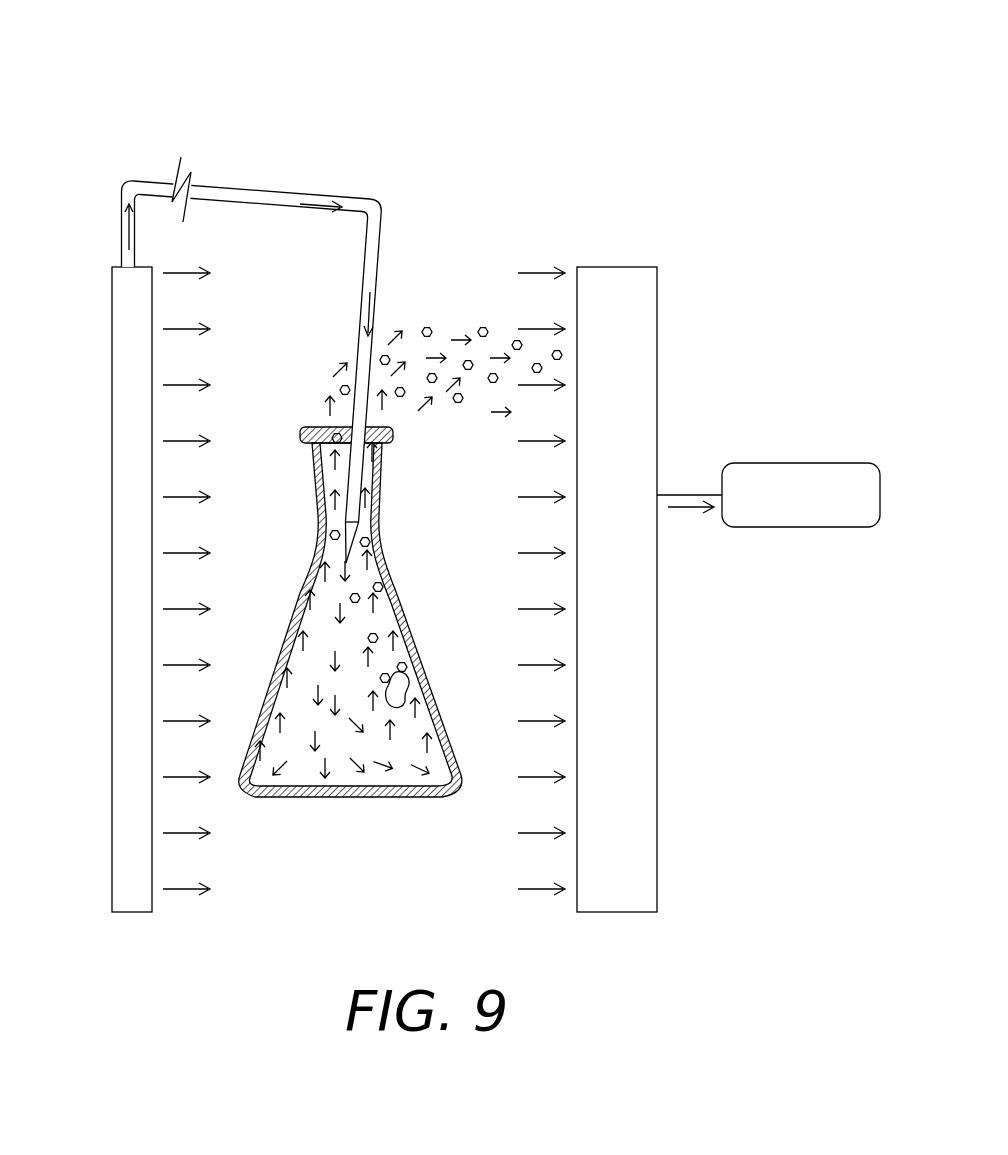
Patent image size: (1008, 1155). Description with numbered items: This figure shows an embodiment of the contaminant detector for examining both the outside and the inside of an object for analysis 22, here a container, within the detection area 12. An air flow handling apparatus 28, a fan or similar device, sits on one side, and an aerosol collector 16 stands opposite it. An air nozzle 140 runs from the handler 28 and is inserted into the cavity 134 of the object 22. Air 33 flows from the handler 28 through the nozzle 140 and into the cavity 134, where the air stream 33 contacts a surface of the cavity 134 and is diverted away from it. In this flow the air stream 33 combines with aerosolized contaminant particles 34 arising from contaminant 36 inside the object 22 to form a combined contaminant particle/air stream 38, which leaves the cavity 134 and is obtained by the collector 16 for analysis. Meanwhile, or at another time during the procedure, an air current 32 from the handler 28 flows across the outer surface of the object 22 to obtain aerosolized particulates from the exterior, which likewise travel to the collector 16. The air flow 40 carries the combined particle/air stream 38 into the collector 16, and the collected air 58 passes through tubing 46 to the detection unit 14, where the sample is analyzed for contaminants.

The detection area 12 is at (474, 168).
The detection unit 14 is at (845, 463).
The aerosol collector 16 is at (630, 267).
The object for analysis 22 is at (349, 604).
The air flow handling apparatus 28 is at (117, 266).
The air current 32 is at (172, 273).
The air stream 33 is at (124, 232).
The aerosolized contaminant particles 34 is at (458, 404).
The contaminant 36 is at (405, 682).
The combined contaminant particle/air stream 38 is at (451, 379).
The air flow 40 is at (539, 272).
The tubing 46 is at (668, 494).
The collected air 58 is at (684, 508).
The cavity 134 is at (320, 418).
The air nozzle 140 is at (272, 352).